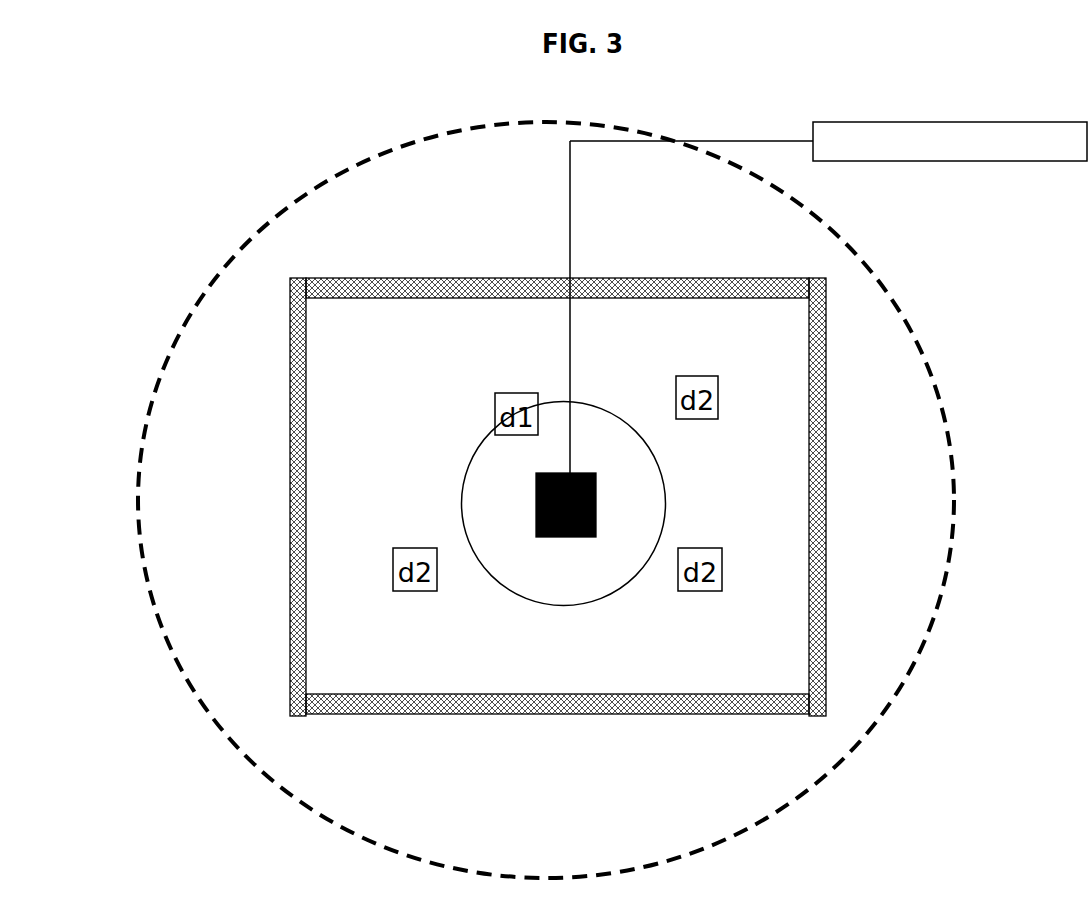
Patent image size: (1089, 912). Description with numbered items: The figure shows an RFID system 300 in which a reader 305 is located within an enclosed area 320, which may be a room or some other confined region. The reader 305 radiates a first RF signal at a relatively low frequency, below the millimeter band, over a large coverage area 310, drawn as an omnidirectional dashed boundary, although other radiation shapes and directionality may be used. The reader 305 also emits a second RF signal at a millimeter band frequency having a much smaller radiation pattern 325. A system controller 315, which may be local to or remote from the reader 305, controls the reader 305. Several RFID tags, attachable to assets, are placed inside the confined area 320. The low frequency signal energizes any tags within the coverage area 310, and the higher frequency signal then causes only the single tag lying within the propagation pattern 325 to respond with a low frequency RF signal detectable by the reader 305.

The system 300 is at (150, 138).
The reader 305 is at (565, 537).
The coverage area 310 is at (888, 291).
The system controller 315 is at (950, 122).
The enclosed area 320 is at (420, 278).
The radiation pattern 325 is at (480, 443).